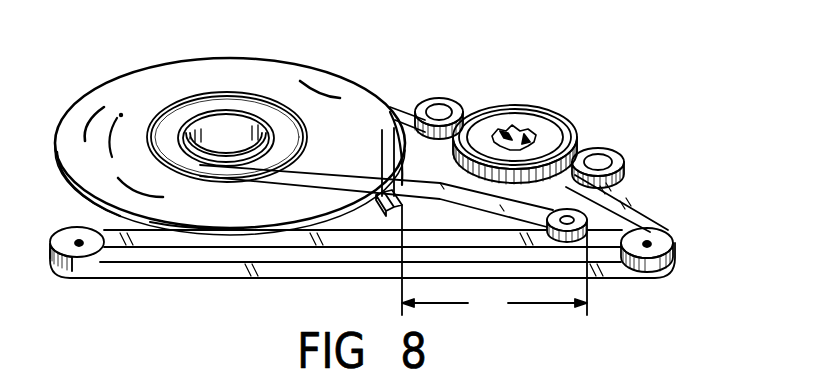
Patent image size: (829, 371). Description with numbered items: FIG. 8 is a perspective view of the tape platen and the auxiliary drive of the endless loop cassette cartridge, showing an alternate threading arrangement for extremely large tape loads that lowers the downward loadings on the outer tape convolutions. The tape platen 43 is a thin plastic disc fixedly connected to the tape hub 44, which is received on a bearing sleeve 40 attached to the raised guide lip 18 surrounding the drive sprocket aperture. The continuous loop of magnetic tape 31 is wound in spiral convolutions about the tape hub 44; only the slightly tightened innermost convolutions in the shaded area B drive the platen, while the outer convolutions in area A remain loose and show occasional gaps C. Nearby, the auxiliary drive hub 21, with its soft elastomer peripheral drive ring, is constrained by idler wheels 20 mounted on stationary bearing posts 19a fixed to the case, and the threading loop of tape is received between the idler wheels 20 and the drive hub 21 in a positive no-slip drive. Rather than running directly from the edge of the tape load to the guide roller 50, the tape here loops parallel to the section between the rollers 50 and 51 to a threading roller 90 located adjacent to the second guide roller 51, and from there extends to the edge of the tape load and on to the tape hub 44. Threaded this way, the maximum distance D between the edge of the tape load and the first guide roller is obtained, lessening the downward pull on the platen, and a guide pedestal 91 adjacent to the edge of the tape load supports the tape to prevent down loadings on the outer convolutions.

The raised guide lip 18 is at (217, 140).
The stationary bearing posts 19a is at (433, 110).
The idler wheels 20 is at (457, 103).
The auxiliary drive hub 21 is at (581, 122).
The continuous loop of magnetic tape 31 is at (258, 210).
The bearing sleeve 40 is at (270, 112).
The tape platen 43 is at (88, 195).
The tape hub 44 is at (288, 150).
The guide roller 50 is at (62, 240).
The second guide roller 51 is at (667, 242).
The threading roller 90 is at (578, 210).
The guide pedestal 91 is at (400, 206).
The loose outer convolutions area A is at (92, 90).
The inner convolutions drive area B is at (304, 139).
The gaps C is at (178, 64).
The maximum distance D is at (494, 260).